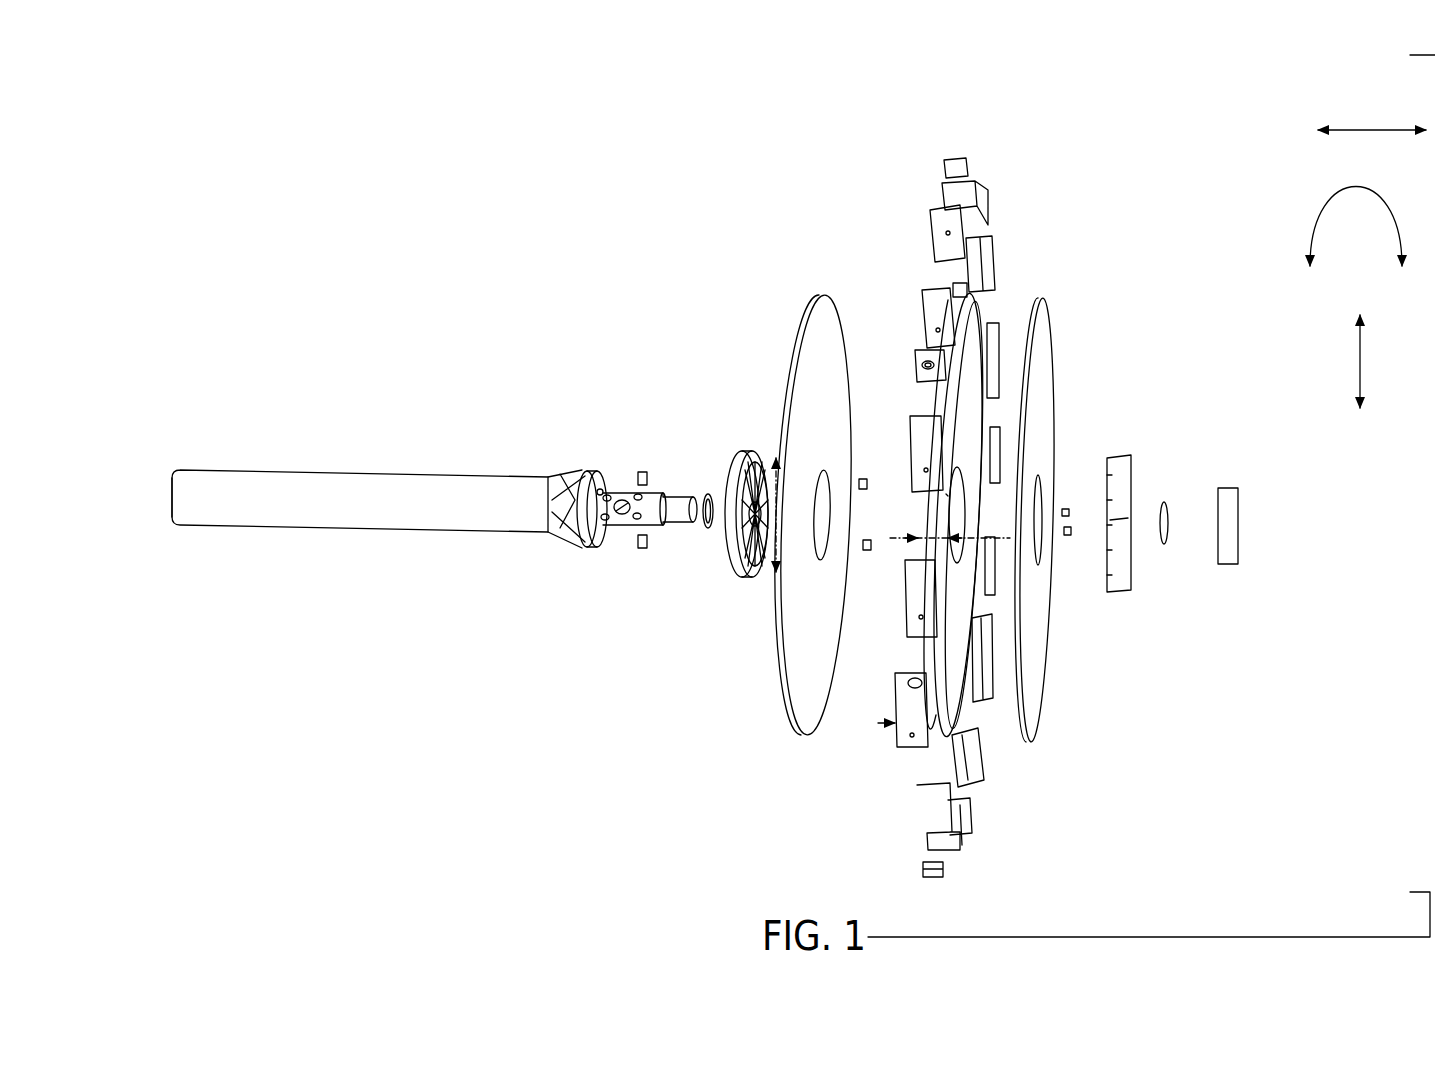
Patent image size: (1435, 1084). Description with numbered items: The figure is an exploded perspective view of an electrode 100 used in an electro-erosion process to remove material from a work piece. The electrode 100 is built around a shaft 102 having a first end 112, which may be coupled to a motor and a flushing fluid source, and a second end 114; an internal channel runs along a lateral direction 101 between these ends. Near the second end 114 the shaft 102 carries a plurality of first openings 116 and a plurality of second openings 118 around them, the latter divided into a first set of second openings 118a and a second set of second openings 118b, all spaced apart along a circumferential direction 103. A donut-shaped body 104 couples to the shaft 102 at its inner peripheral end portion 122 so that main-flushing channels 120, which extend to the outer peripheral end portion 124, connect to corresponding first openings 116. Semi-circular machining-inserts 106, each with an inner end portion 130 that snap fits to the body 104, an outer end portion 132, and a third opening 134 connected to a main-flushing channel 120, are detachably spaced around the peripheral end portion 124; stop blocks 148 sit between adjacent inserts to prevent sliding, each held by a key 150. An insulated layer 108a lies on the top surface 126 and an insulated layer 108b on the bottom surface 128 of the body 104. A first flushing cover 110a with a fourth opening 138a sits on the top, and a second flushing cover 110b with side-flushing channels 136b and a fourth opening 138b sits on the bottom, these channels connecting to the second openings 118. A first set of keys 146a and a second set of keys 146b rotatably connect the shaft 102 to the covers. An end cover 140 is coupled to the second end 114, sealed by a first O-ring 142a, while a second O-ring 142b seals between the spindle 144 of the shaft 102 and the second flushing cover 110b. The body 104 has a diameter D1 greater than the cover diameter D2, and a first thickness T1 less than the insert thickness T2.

The electrode 100 is at (352, 250).
The lateral direction 101 is at (1358, 128).
The shaft 102 is at (222, 490).
The circumferential direction 103 is at (1330, 196).
The body 104 is at (985, 305).
The machining-inserts 106 is at (1022, 705).
The insulated layer 108a is at (1035, 655).
The insulated layer 108b is at (790, 640).
The first flushing cover 110a is at (1120, 458).
The second flushing cover 110b is at (745, 580).
The first end 112 is at (172, 497).
The second end 114 is at (700, 522).
The first openings 116 is at (622, 500).
The second openings 118 is at (600, 520).
The first set of second openings 118a is at (641, 496).
The second set of second openings 118b is at (592, 497).
The main-flushing channels 120 is at (1000, 378).
The inner peripheral end portion 122 is at (1010, 470).
The outer peripheral end portion 124 is at (905, 695).
The top surface 126 is at (975, 668).
The bottom surface 128 is at (925, 396).
The inner end portion 130 is at (946, 262).
The outer end portion 132 is at (945, 228).
The third opening 134 is at (935, 322).
The side-flushing channels 136b is at (748, 522).
The fourth opening 138a is at (1122, 522).
The fourth opening 138b is at (748, 520).
The end cover 140 is at (1232, 550).
The first O-ring 142a is at (1165, 504).
The second O-ring 142b is at (708, 496).
The spindle 144 is at (570, 505).
The first set of keys 146a is at (1068, 537).
The second set of keys 146b is at (641, 550).
The stop blocks 148 is at (945, 870).
The keys 150 is at (862, 478).
The diameter of the body D1 is at (950, 466).
The diameter of the flushing covers D2 is at (795, 455).
The first thickness T1 is at (940, 545).
The second thickness T2 is at (878, 730).